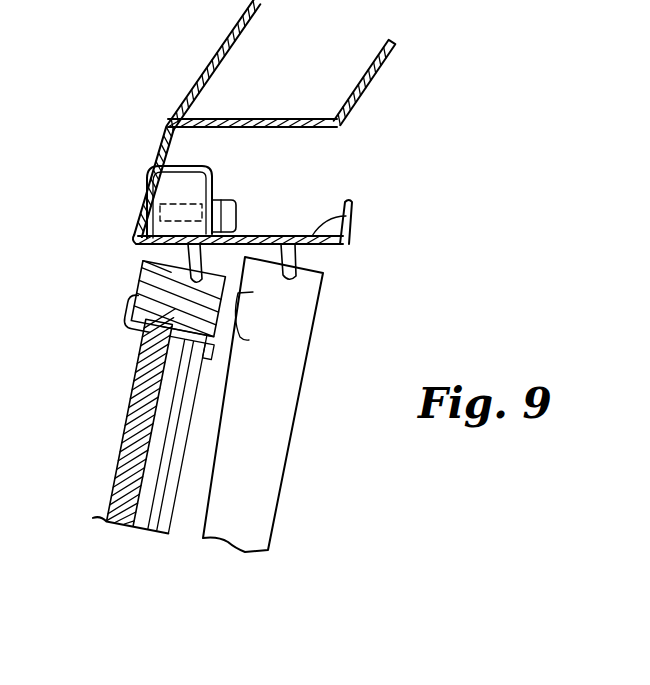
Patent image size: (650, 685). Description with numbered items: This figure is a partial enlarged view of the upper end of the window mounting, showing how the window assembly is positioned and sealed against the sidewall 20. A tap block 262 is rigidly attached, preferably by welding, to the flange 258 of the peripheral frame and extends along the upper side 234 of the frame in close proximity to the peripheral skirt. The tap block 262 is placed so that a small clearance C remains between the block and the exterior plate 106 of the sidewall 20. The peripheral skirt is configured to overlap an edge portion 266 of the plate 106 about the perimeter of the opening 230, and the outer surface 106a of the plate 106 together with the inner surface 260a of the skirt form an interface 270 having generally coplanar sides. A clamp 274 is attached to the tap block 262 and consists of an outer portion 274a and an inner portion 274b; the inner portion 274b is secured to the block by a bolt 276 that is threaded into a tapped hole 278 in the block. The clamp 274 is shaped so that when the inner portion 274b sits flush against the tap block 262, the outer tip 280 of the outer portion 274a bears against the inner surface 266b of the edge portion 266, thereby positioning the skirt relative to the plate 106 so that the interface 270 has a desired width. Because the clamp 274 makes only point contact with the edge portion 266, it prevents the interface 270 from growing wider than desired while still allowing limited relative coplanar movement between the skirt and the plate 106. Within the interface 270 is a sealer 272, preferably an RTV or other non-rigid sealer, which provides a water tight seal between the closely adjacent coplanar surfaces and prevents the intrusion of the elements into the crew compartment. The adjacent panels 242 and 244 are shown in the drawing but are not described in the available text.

The sidewall 20 is at (219, 52).
The exterior plate 106 is at (200, 82).
The outer surface of the plate 106a is at (152, 134).
The outer tip 280 is at (200, 119).
The outer portion 274a is at (222, 120).
The edge portion 266 is at (163, 138).
The inner surface of the edge portion 266b is at (214, 136).
The tap block 262 is at (212, 172).
The interface 270 is at (140, 148).
The sealer 272 is at (141, 172).
The clamp 274 is at (238, 196).
The inner portion 274b is at (258, 212).
The opening 230 is at (132, 243).
The clearance C is at (118, 233).
The inner surface of the peripheral skirt 260a is at (147, 245).
The tapped hole 278 is at (128, 272).
The cushion panel 244 is at (135, 428).
The back panel 242 is at (272, 451).
The bolt 276 is at (272, 252).
The flange 258 is at (348, 216).
The upper side 234 is at (344, 242).